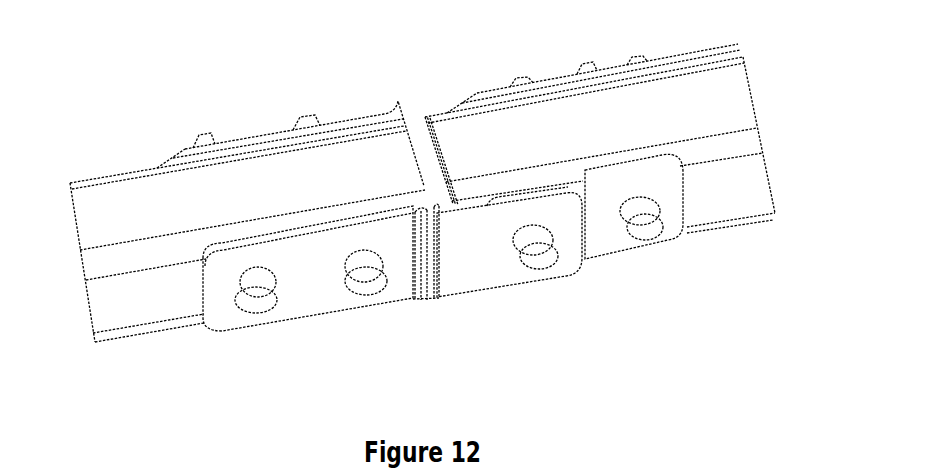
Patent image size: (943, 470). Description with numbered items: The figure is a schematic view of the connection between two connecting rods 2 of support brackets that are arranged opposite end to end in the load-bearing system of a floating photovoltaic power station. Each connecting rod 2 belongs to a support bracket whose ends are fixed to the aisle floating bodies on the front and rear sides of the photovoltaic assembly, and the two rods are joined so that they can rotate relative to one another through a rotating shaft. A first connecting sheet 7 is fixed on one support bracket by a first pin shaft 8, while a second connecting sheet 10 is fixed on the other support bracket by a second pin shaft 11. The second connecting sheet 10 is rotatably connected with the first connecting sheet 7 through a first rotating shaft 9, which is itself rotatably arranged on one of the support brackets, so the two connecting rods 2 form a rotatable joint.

The connecting rod 2 is at (150, 207).
The first connecting sheet 7 is at (317, 275).
The first pin shaft 8 is at (365, 278).
The first rotating shaft 9 is at (538, 258).
The second connecting sheet 10 is at (603, 247).
The second pin shaft 11 is at (655, 225).